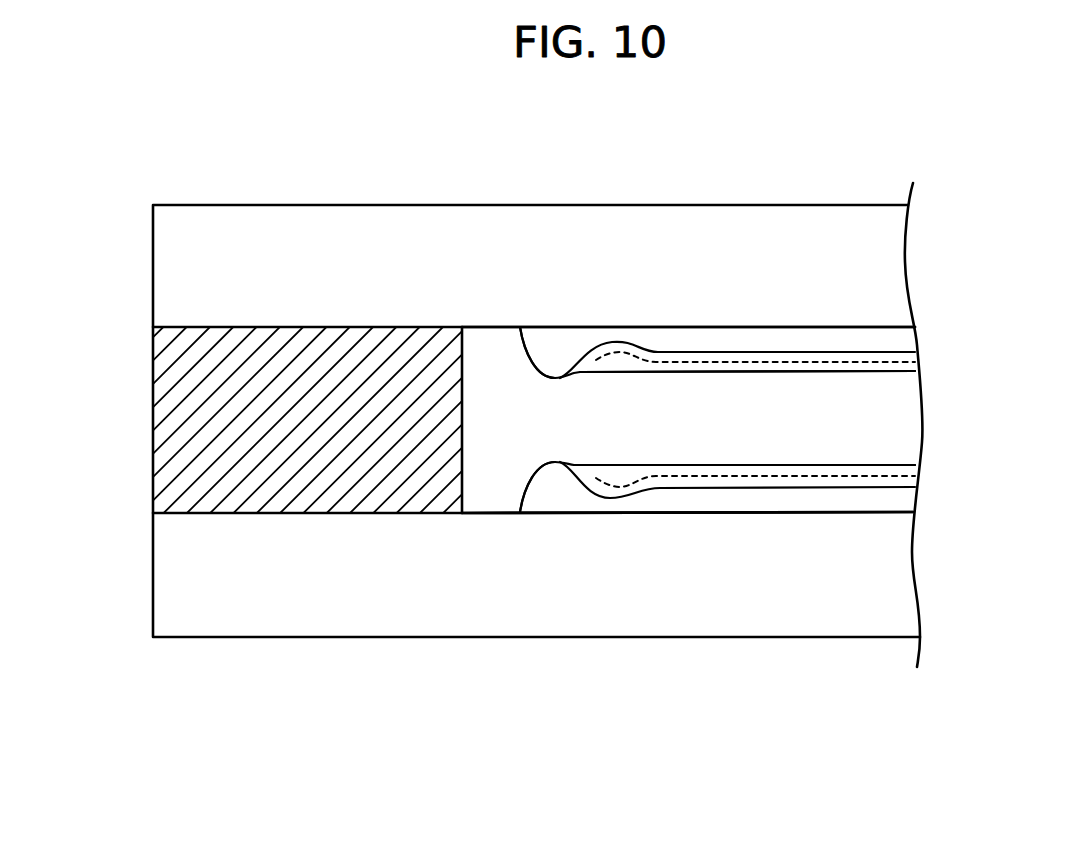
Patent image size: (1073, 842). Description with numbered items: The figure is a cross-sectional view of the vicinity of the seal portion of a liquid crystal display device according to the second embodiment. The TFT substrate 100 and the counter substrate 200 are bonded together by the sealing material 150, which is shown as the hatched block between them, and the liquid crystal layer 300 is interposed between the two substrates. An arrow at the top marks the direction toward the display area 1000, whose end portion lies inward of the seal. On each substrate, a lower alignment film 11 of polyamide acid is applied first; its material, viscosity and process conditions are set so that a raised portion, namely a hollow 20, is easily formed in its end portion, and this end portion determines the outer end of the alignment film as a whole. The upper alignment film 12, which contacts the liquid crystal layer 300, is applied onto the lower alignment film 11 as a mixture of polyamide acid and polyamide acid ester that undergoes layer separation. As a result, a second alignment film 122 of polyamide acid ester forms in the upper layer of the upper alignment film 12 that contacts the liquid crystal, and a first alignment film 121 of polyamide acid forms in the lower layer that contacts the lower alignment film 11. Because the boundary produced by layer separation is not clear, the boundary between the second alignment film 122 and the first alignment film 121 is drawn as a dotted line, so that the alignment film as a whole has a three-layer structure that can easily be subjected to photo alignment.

The TFT substrate 100 is at (177, 588).
The counter substrate 200 is at (177, 262).
The sealing material 150 is at (177, 430).
The display area 1000 is at (858, 173).
The lower alignment film 11 is at (918, 330).
The upper alignment film 12 is at (779, 419).
The first alignment film 121 is at (915, 352).
The second alignment film 122 is at (912, 370).
The hollow 20 is at (557, 378).
The liquid crystal layer 300 is at (904, 424).